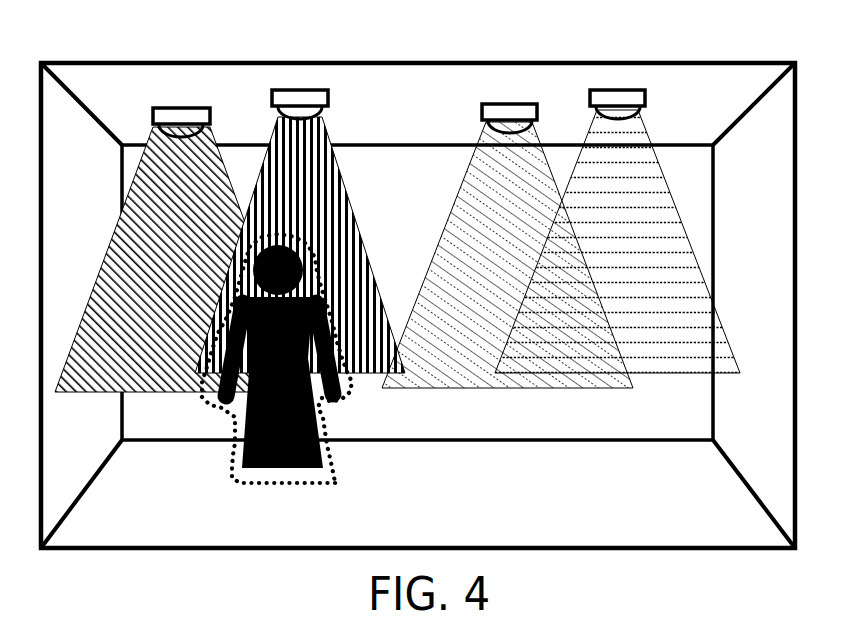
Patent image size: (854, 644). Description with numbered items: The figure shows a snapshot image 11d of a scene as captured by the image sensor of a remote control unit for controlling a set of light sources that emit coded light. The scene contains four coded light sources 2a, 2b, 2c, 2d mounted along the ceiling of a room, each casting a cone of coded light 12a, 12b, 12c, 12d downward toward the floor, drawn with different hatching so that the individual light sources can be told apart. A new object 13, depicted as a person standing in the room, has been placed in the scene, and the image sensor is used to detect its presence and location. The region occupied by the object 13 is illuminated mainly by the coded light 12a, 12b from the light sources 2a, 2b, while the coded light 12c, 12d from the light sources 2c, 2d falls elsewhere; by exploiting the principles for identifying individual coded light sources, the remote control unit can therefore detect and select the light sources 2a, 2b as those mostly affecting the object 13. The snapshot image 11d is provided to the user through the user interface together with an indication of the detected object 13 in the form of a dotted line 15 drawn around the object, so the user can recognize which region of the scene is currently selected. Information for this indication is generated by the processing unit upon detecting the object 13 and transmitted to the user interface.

The coded light source 2a is at (180, 108).
The coded light source 2b is at (300, 97).
The coded light source 2c is at (508, 105).
The coded light source 2d is at (615, 90).
The snapshot image 11d is at (420, 62).
The coded light 12a is at (137, 368).
The coded light 12b is at (363, 358).
The coded light 12c is at (473, 362).
The coded light 12d is at (670, 343).
The object 13 is at (275, 468).
The dotted line 15 is at (315, 483).